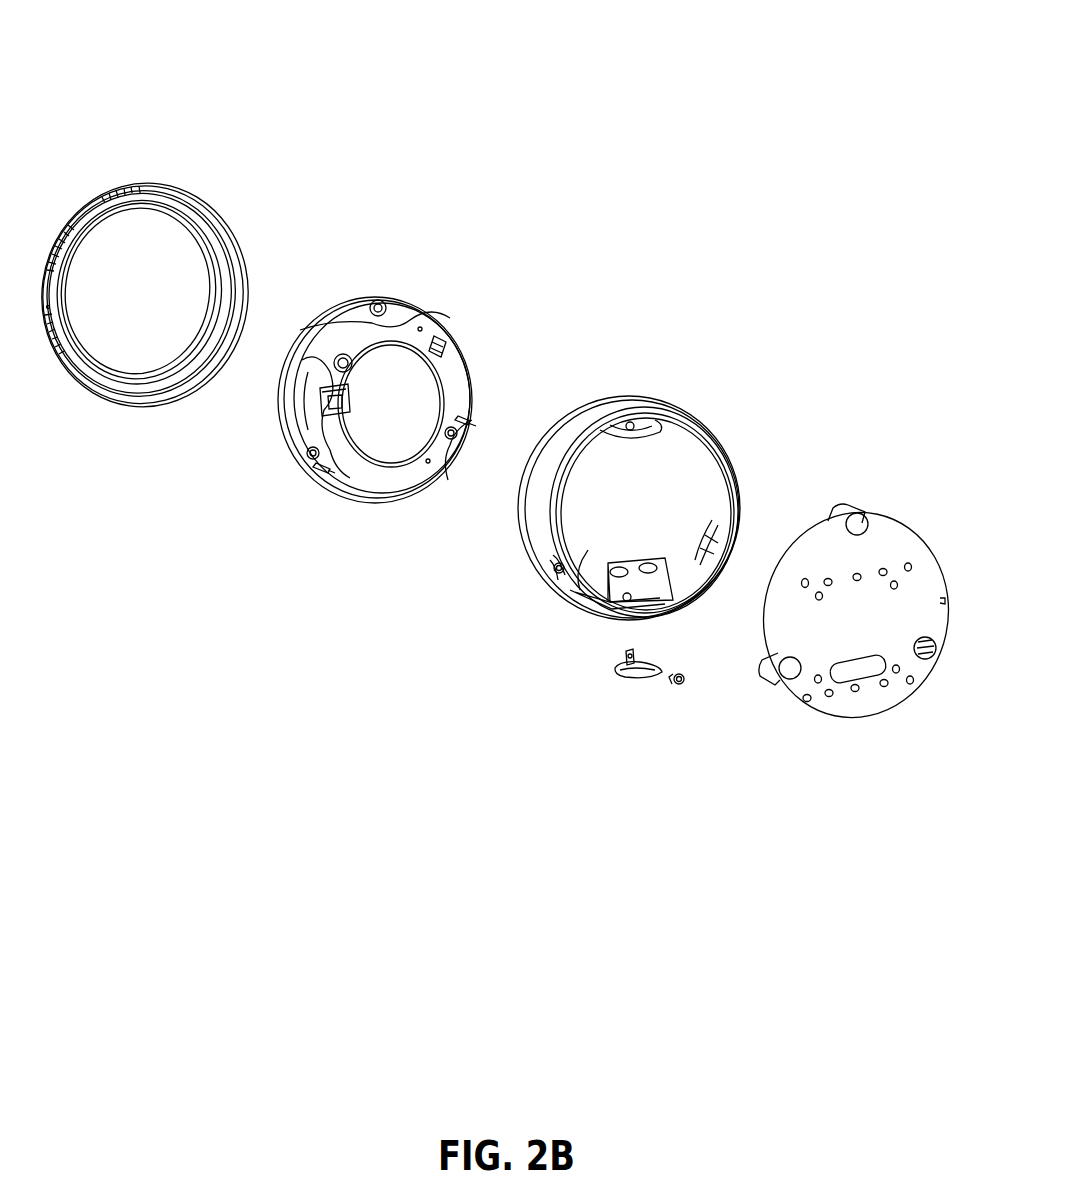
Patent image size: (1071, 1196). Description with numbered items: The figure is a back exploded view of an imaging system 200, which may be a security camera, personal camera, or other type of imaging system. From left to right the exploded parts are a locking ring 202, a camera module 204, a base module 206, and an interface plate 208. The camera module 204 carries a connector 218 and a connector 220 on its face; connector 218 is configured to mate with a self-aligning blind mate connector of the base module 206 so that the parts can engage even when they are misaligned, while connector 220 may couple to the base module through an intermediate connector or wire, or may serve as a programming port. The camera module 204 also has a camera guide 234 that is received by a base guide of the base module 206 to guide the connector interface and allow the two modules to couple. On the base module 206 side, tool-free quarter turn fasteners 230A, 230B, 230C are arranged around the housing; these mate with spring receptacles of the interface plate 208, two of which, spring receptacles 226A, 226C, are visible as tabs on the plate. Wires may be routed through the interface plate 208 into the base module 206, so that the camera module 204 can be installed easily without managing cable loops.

The imaging system 200 is at (248, 98).
The locking ring 202 is at (212, 198).
The camera module 204 is at (363, 458).
The base module 206 is at (656, 470).
The interface plate 208 is at (789, 616).
The connector 218 is at (441, 343).
The connector 220 is at (325, 415).
The camera guide 234 is at (300, 410).
The fastener 230A is at (631, 425).
The fastener 230B is at (702, 540).
The fastener 230C is at (559, 578).
The spring receptacle 226A is at (834, 504).
The spring receptacle 226C is at (797, 708).